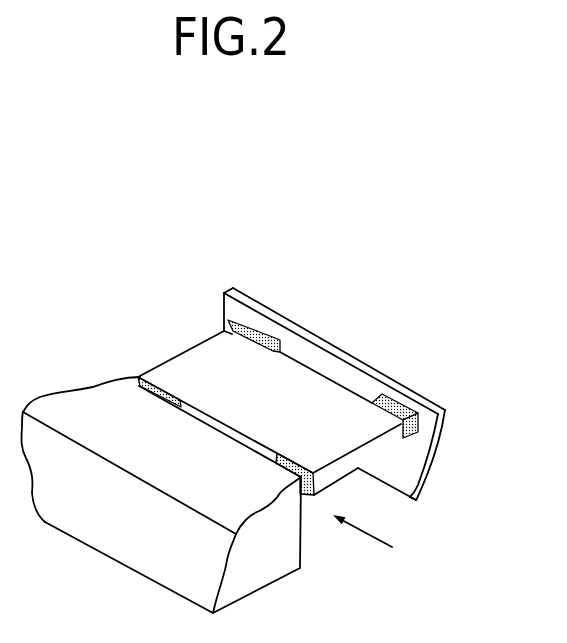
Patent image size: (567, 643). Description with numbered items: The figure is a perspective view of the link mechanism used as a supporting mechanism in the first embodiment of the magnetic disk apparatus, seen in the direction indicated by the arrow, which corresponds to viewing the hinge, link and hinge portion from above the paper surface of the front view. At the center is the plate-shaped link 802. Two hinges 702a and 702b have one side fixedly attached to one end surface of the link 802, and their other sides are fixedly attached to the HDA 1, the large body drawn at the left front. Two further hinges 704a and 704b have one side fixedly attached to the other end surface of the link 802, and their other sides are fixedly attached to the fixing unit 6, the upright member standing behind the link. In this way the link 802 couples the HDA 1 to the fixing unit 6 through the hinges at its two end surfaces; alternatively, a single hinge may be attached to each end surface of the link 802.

The HDA 1 is at (90, 403).
The link 802 is at (303, 403).
The fixing unit 6 is at (353, 387).
The hinge 702a is at (312, 495).
The hinge 702b is at (162, 382).
The hinge 704a is at (410, 436).
The hinge 704b is at (248, 316).